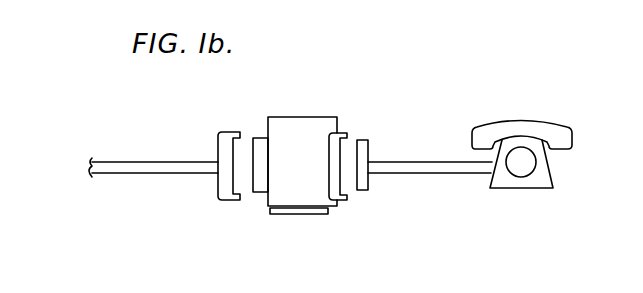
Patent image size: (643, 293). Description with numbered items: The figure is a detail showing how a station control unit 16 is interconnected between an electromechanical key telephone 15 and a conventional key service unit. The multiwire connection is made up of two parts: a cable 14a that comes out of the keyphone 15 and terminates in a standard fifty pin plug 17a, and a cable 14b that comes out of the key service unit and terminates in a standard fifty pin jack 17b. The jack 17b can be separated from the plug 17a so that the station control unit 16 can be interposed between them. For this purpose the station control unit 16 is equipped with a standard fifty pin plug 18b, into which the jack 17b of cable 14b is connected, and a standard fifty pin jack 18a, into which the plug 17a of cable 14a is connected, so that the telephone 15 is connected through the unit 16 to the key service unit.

The cable 14a is at (418, 160).
The cable 14b is at (168, 159).
The electromechanical key telephone 15 is at (553, 123).
The station control unit 16 is at (321, 115).
The plug 17a is at (362, 198).
The jack 17b is at (215, 200).
The jack 18a is at (345, 208).
The plug 18b is at (257, 202).